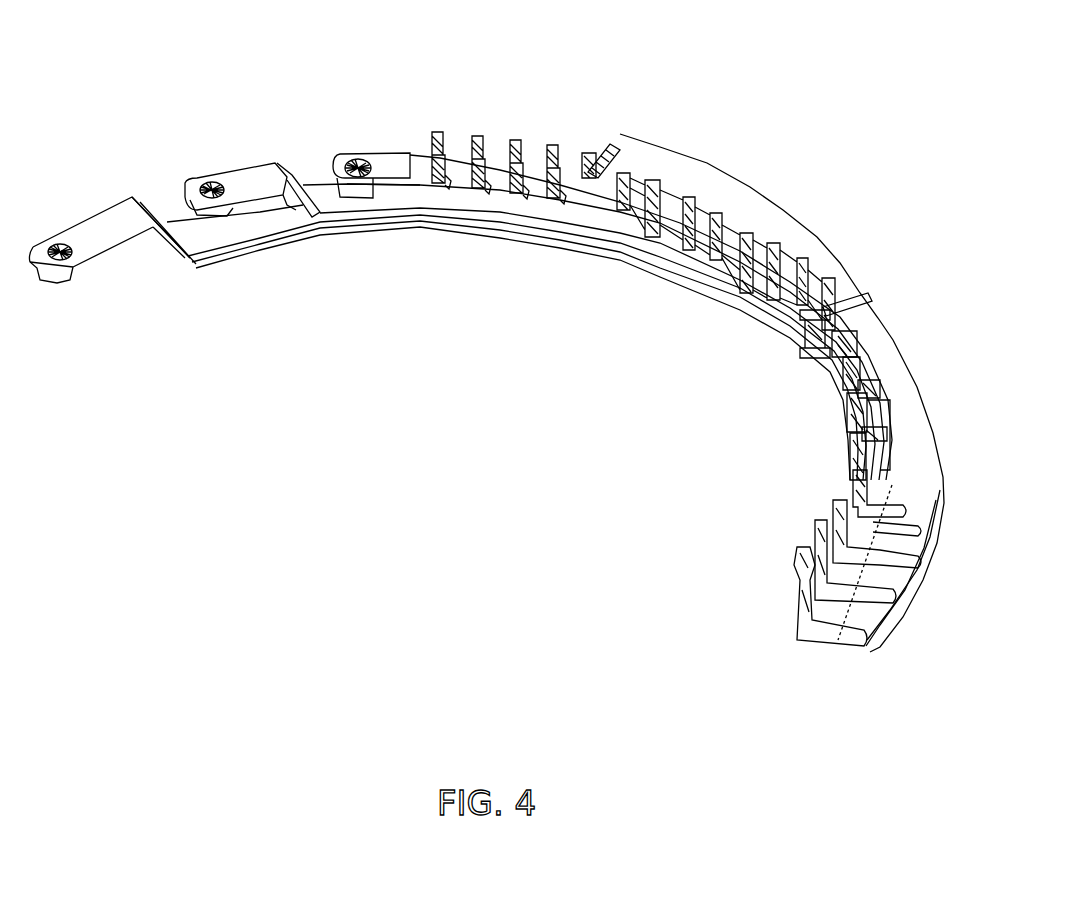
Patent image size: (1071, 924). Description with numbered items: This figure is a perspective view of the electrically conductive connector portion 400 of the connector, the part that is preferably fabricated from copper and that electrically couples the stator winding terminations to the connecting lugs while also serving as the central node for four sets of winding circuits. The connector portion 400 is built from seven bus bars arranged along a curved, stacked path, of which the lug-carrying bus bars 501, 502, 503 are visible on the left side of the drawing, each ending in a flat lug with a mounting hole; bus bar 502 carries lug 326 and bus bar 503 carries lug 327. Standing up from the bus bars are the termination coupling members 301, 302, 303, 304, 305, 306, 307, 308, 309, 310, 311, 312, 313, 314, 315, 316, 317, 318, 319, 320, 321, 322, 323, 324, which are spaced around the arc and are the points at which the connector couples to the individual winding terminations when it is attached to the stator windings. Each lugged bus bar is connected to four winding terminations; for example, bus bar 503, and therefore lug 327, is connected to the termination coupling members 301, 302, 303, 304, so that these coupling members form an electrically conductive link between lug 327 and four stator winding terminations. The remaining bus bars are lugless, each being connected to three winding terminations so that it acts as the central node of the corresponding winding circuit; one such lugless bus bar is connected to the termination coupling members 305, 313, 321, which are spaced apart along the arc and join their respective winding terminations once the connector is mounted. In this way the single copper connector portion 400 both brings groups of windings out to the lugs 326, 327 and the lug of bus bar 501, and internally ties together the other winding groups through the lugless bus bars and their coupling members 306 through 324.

The electrically conductive connector portion 400 is at (60, 233).
The termination coupling member 301 is at (440, 130).
The termination coupling member 302 is at (478, 133).
The termination coupling member 303 is at (517, 143).
The termination coupling member 304 is at (553, 147).
The termination coupling member 305 is at (591, 153).
The termination coupling member 306 is at (622, 172).
The termination coupling member 307 is at (662, 190).
The termination coupling member 308 is at (690, 195).
The termination coupling member 309 is at (714, 218).
The termination coupling member 310 is at (737, 222).
The termination coupling member 311 is at (770, 258).
The termination coupling member 312 is at (792, 257).
The termination coupling member 313 is at (808, 292).
The termination coupling member 314 is at (828, 313).
The termination coupling member 315 is at (847, 335).
The termination coupling member 316 is at (842, 357).
The termination coupling member 317 is at (878, 390).
The termination coupling member 318 is at (850, 403).
The termination coupling member 319 is at (876, 430).
The termination coupling member 320 is at (850, 450).
The termination coupling member 321 is at (847, 475).
The termination coupling member 322 is at (833, 500).
The termination coupling member 323 is at (820, 522).
The termination coupling member 324 is at (803, 547).
The lug 326 is at (213, 178).
The lug 327 is at (358, 150).
The bus bar 501 is at (240, 227).
The bus bar 502 is at (330, 198).
The bus bar 503 is at (403, 170).